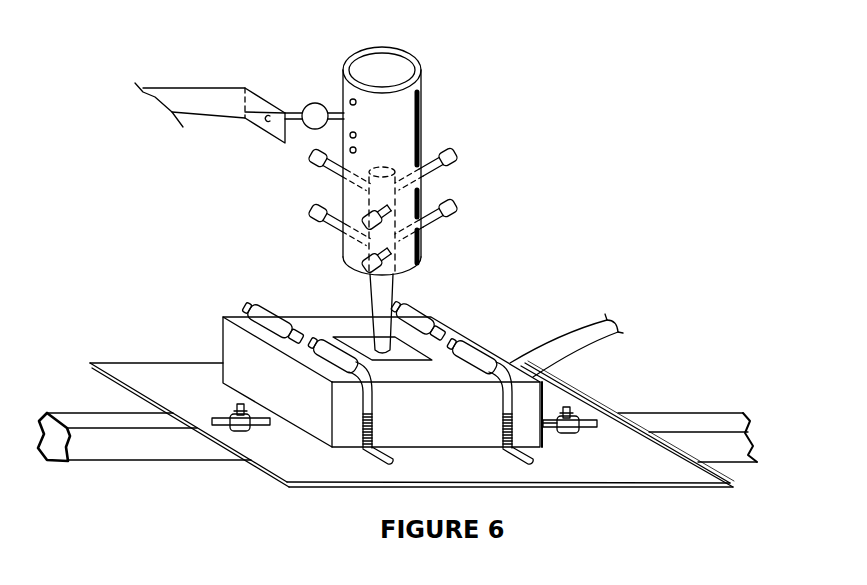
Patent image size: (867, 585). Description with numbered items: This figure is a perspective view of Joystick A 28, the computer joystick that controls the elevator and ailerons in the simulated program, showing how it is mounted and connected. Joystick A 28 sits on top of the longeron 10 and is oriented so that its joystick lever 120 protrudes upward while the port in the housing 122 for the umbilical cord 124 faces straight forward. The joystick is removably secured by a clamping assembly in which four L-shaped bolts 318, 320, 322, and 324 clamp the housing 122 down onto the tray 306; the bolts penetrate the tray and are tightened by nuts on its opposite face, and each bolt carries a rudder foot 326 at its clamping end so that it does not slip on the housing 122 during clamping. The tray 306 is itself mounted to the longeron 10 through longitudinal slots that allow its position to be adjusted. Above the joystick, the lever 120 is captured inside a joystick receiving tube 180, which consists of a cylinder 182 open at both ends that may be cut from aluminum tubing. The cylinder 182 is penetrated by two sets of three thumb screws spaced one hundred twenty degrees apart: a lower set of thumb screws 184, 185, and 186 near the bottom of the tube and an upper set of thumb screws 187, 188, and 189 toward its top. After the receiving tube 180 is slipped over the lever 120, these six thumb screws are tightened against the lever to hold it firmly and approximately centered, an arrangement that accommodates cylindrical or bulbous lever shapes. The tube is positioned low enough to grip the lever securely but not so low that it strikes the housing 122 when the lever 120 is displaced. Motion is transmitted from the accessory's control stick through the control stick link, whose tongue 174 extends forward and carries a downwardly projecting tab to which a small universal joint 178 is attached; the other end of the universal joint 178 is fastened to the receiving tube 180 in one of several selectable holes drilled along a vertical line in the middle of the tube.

The longeron 10 is at (193, 462).
The Joystick A 28 is at (220, 302).
The joystick lever 120 is at (400, 286).
The joystick housing 122 is at (223, 340).
The umbilical cord 124 is at (592, 353).
The tongue 174 is at (212, 85).
The universal joint 178 is at (312, 102).
The joystick receiving tube 180 is at (445, 115).
The cylinder 182 is at (422, 88).
The thumb screw 184 is at (310, 211).
The thumb screw 185 is at (360, 262).
The thumb screw 186 is at (456, 208).
The thumb screw 187 is at (310, 157).
The thumb screw 188 is at (365, 212).
The thumb screw 189 is at (456, 158).
The tray 306 is at (560, 483).
The L-shaped bolt 318 is at (372, 412).
The L-shaped bolt 320 is at (504, 398).
The L-shaped bolt 322 is at (253, 308).
The L-shaped bolt 324 is at (400, 310).
The rudder foot 326 is at (488, 368).